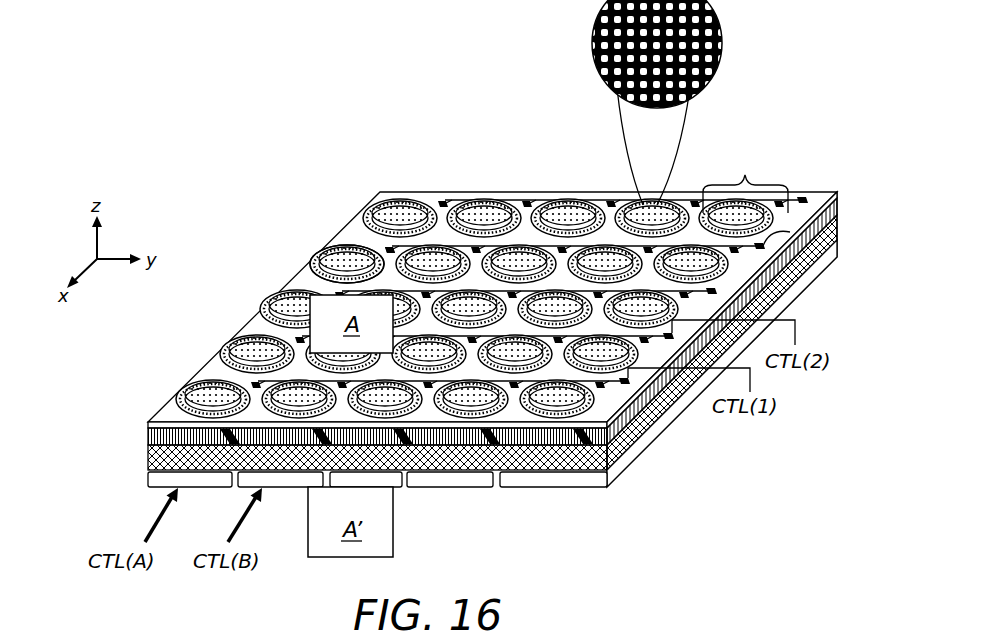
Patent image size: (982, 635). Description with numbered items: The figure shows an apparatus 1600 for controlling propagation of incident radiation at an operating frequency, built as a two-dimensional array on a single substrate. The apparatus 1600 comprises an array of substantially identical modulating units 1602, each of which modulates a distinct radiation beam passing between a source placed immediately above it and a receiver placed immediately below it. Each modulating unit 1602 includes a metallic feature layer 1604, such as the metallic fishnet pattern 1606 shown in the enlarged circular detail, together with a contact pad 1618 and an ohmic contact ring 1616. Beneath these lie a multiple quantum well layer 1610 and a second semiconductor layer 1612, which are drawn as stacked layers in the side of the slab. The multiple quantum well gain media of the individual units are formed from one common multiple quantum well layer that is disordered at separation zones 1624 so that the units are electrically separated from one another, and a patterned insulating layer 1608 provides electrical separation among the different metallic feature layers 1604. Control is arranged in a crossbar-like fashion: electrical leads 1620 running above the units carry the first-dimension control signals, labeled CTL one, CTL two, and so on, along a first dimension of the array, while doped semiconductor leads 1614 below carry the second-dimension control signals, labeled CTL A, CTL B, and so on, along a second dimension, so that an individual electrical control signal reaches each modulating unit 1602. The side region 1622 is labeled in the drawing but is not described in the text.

The apparatus 1600 is at (183, 100).
The modulating unit 1602 is at (743, 192).
The metallic feature layer 1604 is at (345, 258).
The metallic fishnet pattern 1606 is at (727, 24).
The patterned insulating layer 1608 is at (148, 425).
The multiple quantum well layer 1610 is at (148, 436).
The second semiconductor layer 1612 is at (148, 457).
The doped semiconductor leads 1614 is at (148, 480).
The ohmic contact ring 1616 is at (316, 263).
The contact pad 1618 is at (390, 252).
The electrical leads 1620 is at (420, 246).
The side surface 1622 is at (823, 262).
The separation zones 1624 is at (568, 440).